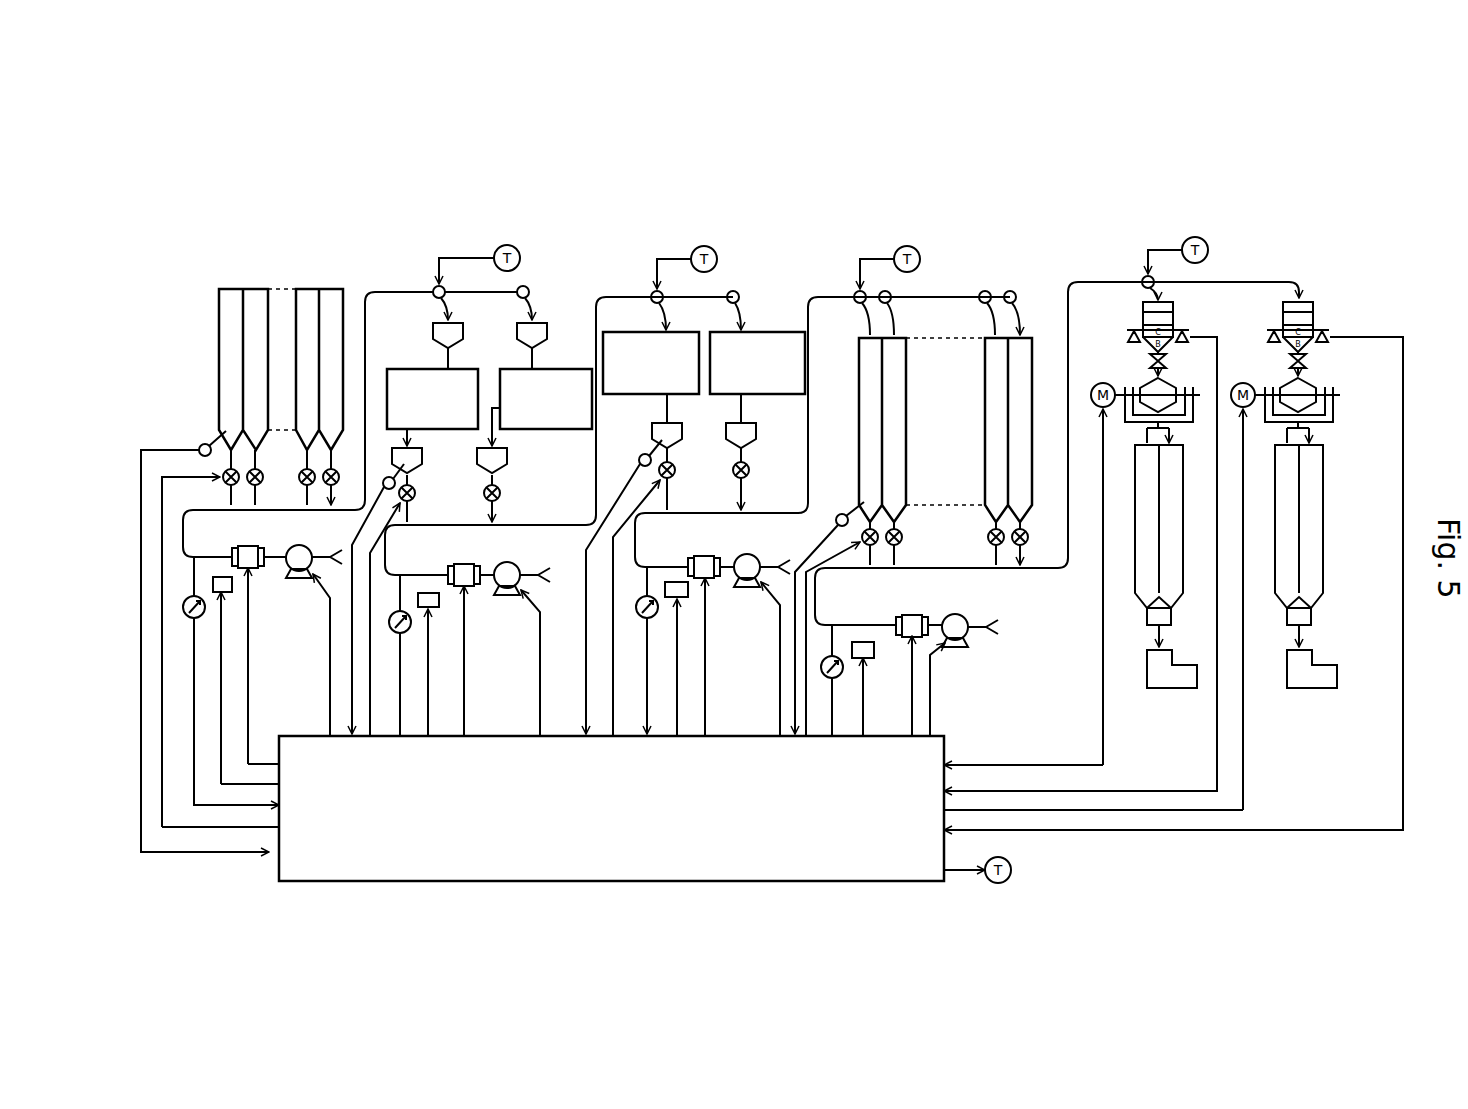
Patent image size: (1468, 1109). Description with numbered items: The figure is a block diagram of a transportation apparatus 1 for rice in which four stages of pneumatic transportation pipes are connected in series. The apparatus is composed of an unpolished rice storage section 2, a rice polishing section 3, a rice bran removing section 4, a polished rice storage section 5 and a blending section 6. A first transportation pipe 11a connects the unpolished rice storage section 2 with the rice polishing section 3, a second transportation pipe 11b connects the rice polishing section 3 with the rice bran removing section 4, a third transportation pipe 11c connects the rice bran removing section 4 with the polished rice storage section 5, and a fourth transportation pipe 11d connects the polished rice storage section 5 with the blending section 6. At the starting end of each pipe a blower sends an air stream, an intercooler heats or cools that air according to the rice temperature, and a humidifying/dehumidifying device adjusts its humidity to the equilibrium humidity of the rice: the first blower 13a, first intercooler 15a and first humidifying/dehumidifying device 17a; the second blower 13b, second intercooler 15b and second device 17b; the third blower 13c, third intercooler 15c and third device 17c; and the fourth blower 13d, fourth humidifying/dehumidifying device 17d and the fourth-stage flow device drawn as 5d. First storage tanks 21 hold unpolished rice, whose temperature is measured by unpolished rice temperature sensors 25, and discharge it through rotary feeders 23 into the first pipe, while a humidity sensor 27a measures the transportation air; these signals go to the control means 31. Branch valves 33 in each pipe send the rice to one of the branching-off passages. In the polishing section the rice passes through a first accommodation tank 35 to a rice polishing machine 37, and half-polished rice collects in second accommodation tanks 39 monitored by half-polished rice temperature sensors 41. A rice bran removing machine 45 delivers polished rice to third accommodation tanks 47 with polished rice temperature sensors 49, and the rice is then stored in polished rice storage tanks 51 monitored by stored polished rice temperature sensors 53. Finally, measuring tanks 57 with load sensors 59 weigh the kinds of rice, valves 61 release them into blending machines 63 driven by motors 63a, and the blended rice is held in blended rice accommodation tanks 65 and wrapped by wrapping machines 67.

The transportation apparatus 1 is at (1036, 194).
The unpolished rice storage section 2 is at (262, 228).
The rice polishing section 3 is at (482, 222).
The rice bran removing section 4 is at (670, 227).
The polished rice storage section 5 is at (898, 227).
The blending section 6 is at (1250, 224).
The first transportation pipe 11a is at (380, 296).
The second transportation pipe 11b is at (599, 295).
The third transportation pipe 11c is at (808, 295).
The fourth transportation pipe 11d is at (1080, 282).
The first blower 13a is at (302, 549).
The second blower 13b is at (519, 563).
The third blower 13c is at (756, 553).
The fourth blower 13d is at (964, 610).
The first intercooler 15a is at (246, 550).
The second intercooler 15b is at (456, 573).
The third intercooler 15c is at (702, 563).
The flow meter 5d is at (912, 616).
The first humidifying/dehumidifying device 17a is at (233, 588).
The second humidifying/dehumidifying device 17b is at (439, 604).
The third humidifying/dehumidifying device 17c is at (688, 596).
The fourth humidifying/dehumidifying device 17d is at (874, 658).
The first storage tank 21 is at (226, 291).
The rotary feeder 23 is at (209, 474).
The unpolished rice temperature sensor 25 is at (200, 444).
The humidity sensor 27a is at (182, 604).
The control means 31 is at (710, 880).
The branch valve 33 is at (435, 297).
The first accommodation tank 35 is at (461, 330).
The rice polishing machine 37 is at (394, 370).
The second accommodation tank 39 is at (504, 456).
The half-polished rice temperature sensor 41 is at (372, 490).
The rice bran removing machine 45 is at (760, 334).
The third accommodation tank 47 is at (753, 442).
The polished rice temperature sensor 49 is at (640, 458).
The polished rice storage tank 51 is at (909, 339).
The stored polished rice temperature sensor 53 is at (838, 514).
The measuring tank 57 is at (1302, 300).
The load sensor 59 is at (1330, 335).
The valve 61 is at (1312, 360).
The blending machine 63 is at (1332, 390).
The motor 63a is at (1101, 383).
The blended rice accommodation tank 65 is at (1322, 500).
The wrapping machine 67 is at (1315, 664).